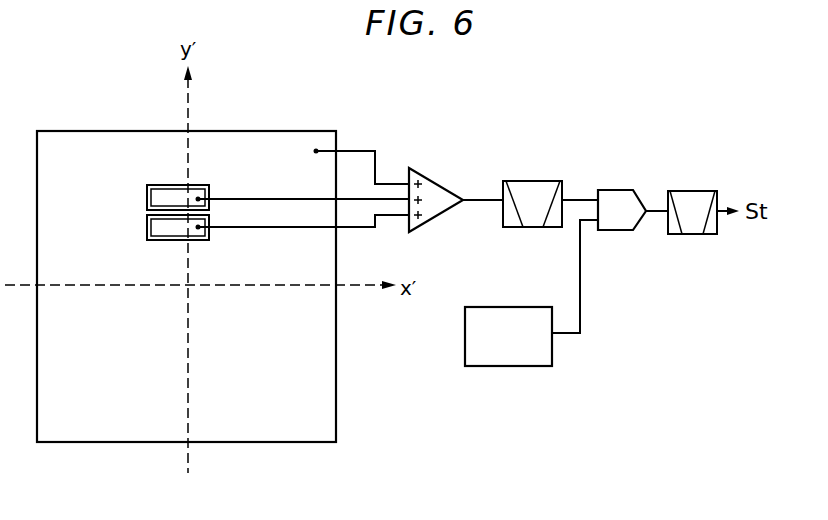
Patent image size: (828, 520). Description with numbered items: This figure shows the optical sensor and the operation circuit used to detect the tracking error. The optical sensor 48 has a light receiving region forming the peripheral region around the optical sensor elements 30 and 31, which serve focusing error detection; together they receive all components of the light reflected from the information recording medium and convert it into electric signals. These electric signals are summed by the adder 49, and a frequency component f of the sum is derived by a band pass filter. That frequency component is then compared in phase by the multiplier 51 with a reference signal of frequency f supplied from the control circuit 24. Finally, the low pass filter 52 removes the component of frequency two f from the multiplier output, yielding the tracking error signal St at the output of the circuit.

The control circuit 24 is at (529, 307).
The optical sensor element 30 is at (160, 193).
The optical sensor element 31 is at (158, 230).
The optical sensor 48 is at (299, 131).
The adder 49 is at (448, 183).
The multiplier 51 is at (625, 190).
The low pass filter 52 is at (700, 191).